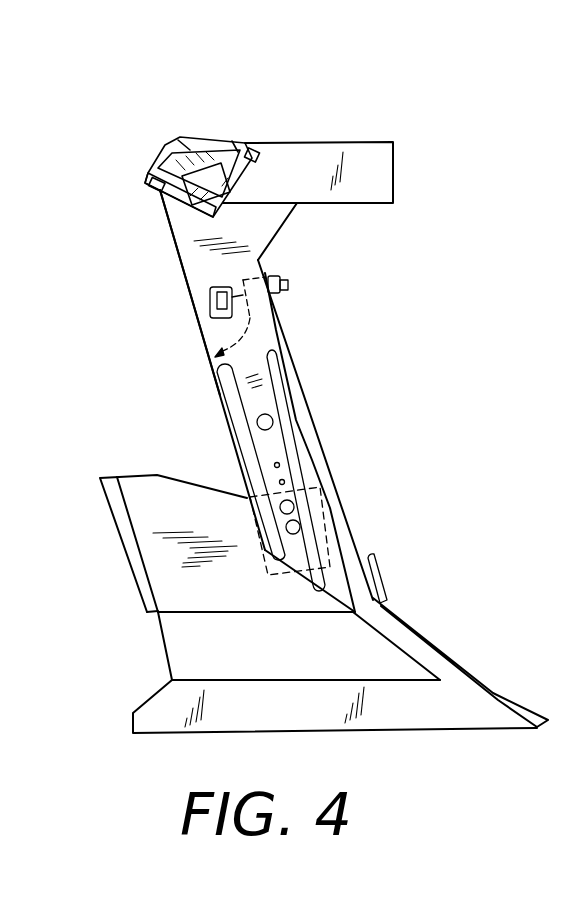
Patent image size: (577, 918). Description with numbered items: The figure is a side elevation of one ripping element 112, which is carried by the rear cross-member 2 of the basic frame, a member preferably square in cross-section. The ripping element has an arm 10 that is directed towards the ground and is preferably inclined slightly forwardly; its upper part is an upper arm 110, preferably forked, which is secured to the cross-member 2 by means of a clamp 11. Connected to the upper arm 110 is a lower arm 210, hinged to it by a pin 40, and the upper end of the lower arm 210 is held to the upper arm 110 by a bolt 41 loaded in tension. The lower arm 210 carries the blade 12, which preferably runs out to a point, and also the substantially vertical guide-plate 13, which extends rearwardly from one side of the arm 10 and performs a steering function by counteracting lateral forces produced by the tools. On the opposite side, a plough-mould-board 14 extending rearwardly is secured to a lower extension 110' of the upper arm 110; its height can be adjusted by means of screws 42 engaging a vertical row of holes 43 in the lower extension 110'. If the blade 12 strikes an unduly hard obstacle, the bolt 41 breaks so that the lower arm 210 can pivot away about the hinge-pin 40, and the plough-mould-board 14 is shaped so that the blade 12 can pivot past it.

The rear cross-member 2 is at (196, 148).
The arm 10 is at (188, 273).
The clamp 11 is at (148, 157).
The blade 12 is at (467, 667).
The guide-plate 13 is at (160, 707).
The plough-mould-board 14 is at (158, 557).
The pin 40 is at (273, 419).
The bolt 41 is at (273, 279).
The screws 42 is at (294, 509).
The holes 43 is at (279, 481).
The upper arm 110 is at (162, 292).
The lower extension 110' is at (334, 442).
The ripping element 112 is at (467, 583).
The lower arm 210 is at (320, 468).